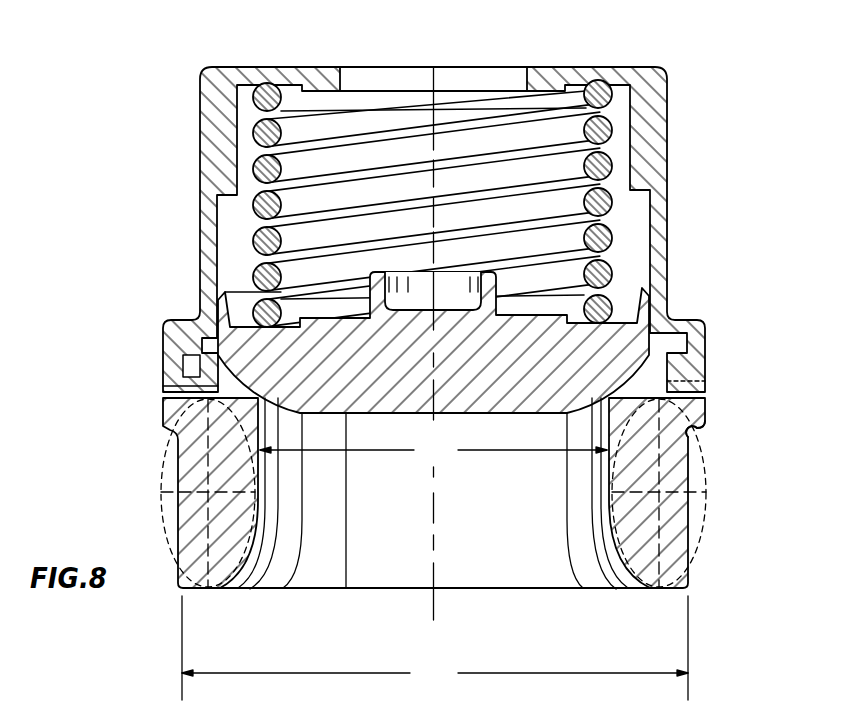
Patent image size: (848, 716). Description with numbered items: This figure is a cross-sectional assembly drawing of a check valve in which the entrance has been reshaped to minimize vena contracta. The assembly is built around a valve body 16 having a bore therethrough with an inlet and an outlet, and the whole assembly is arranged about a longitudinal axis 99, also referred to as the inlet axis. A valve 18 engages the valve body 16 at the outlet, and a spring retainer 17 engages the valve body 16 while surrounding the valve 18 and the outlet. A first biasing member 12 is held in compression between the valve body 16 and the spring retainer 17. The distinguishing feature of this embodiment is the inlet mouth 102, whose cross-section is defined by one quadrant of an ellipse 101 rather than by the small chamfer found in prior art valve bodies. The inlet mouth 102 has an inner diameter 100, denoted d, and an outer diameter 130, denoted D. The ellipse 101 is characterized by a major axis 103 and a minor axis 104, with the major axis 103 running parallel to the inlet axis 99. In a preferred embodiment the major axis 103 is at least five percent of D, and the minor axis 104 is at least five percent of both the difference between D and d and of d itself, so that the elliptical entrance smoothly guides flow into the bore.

The spring retainer 17 is at (543, 64).
The first biasing member 12 is at (612, 203).
The valve 18 is at (570, 355).
The valve body 16 is at (673, 540).
The longitudinal axis 99 is at (432, 599).
The inner diameter 100 is at (433, 451).
The ellipse 101 is at (700, 441).
The inlet mouth 102 is at (630, 540).
The major axis 103 is at (662, 471).
The minor axis 104 is at (684, 503).
The outer diameter 130 is at (435, 648).